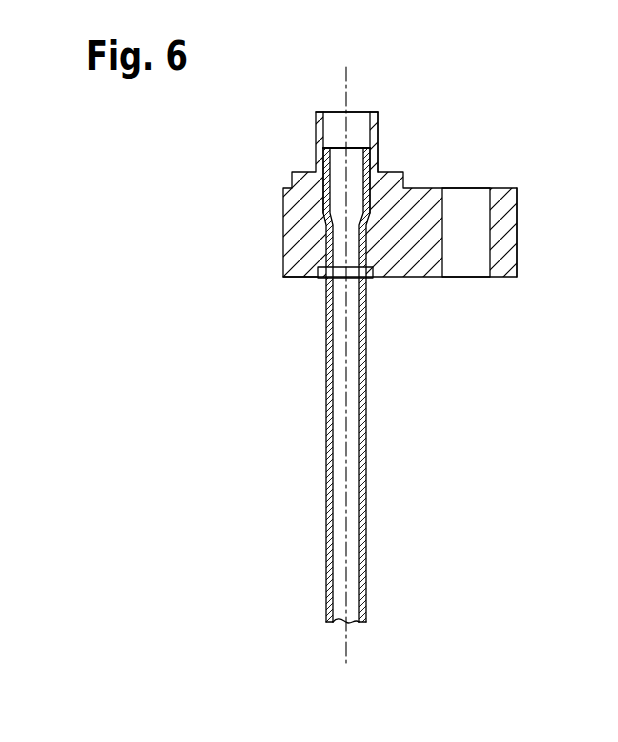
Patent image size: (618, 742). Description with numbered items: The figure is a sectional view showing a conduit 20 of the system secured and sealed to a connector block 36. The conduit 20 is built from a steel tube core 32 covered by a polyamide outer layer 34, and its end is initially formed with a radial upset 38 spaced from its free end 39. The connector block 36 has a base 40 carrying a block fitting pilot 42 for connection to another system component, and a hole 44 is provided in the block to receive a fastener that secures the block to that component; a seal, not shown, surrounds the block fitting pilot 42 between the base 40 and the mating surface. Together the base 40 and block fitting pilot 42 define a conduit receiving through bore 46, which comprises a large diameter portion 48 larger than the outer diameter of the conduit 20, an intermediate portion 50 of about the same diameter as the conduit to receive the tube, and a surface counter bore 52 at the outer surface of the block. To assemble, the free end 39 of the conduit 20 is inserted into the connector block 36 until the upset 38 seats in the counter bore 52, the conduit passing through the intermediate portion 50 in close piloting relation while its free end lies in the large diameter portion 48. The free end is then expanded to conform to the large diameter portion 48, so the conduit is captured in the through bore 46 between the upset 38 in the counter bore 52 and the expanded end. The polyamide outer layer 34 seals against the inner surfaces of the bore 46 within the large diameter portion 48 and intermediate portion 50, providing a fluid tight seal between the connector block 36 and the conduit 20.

The conduit 20 is at (397, 403).
The steel tube core 32 is at (355, 623).
The polyamide outer layer 34 is at (365, 550).
The connector block 36 is at (520, 255).
The radial upset 38 is at (318, 280).
The free end 39 is at (373, 123).
The base 40 is at (283, 260).
The block fitting pilot 42 is at (372, 165).
The hole 44 is at (490, 193).
The conduit receiving through bore 46 is at (331, 103).
The large diameter portion 48 is at (357, 112).
The intermediate portion 50 is at (330, 190).
The surface counter bore 52 is at (372, 279).